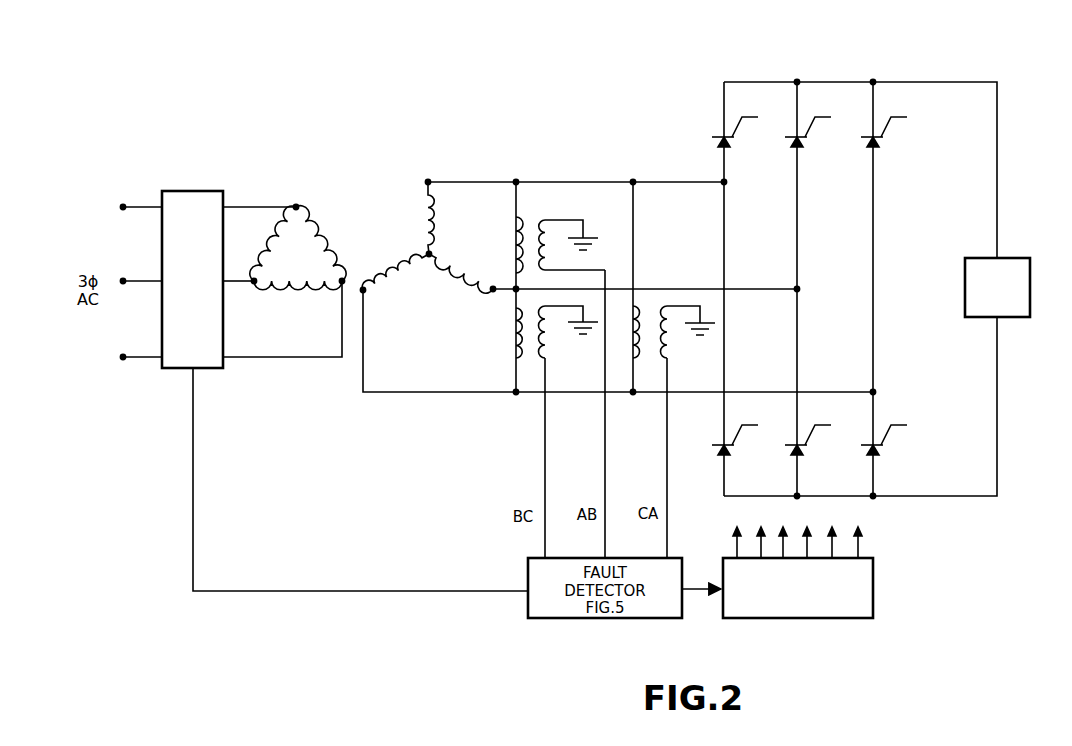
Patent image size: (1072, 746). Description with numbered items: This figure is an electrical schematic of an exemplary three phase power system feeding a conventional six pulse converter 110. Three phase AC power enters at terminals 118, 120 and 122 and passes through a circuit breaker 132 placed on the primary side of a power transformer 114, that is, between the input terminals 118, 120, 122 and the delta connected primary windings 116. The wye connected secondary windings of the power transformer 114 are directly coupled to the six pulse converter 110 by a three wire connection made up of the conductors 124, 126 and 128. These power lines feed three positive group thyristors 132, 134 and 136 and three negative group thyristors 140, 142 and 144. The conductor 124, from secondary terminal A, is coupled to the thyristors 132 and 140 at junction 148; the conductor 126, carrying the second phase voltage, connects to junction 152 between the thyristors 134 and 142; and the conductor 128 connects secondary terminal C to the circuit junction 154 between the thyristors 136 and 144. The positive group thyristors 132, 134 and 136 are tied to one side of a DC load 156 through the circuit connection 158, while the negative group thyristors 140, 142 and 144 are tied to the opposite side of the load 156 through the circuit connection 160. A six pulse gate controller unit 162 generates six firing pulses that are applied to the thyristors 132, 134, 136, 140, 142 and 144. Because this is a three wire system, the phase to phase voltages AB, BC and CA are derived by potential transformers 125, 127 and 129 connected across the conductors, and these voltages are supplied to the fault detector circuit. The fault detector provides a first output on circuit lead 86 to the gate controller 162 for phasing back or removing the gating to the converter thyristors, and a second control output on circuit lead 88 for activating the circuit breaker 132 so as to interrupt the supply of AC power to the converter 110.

The circuit lead 86 is at (708, 598).
The circuit lead 88 is at (370, 593).
The six pulse converter 110 is at (700, 94).
The power transformer 114 is at (389, 235).
The delta connected primary windings 116 is at (283, 263).
The terminal 118 is at (123, 206).
The terminal 120 is at (125, 280).
The terminal 122 is at (123, 356).
The conductor 124 is at (492, 180).
The potential transformer 125 is at (528, 220).
The conductor 126 is at (500, 284).
The potential transformer 127 is at (526, 361).
The conductor 128 is at (446, 396).
The potential transformer 129 is at (657, 363).
The thyristor / circuit breaker 132 is at (207, 188).
The thyristor 134 is at (811, 148).
The thyristor 136 is at (887, 148).
The thyristor 140 is at (737, 456).
The thyristor 142 is at (811, 456).
The thyristor 144 is at (887, 456).
The junction 148 is at (733, 186).
The junction 152 is at (812, 289).
The circuit junction 154 is at (879, 392).
The DC load 156 is at (1028, 255).
The circuit connection 158 is at (935, 80).
The circuit connection 160 is at (1005, 391).
The six pulse gate controller unit 162 is at (877, 607).